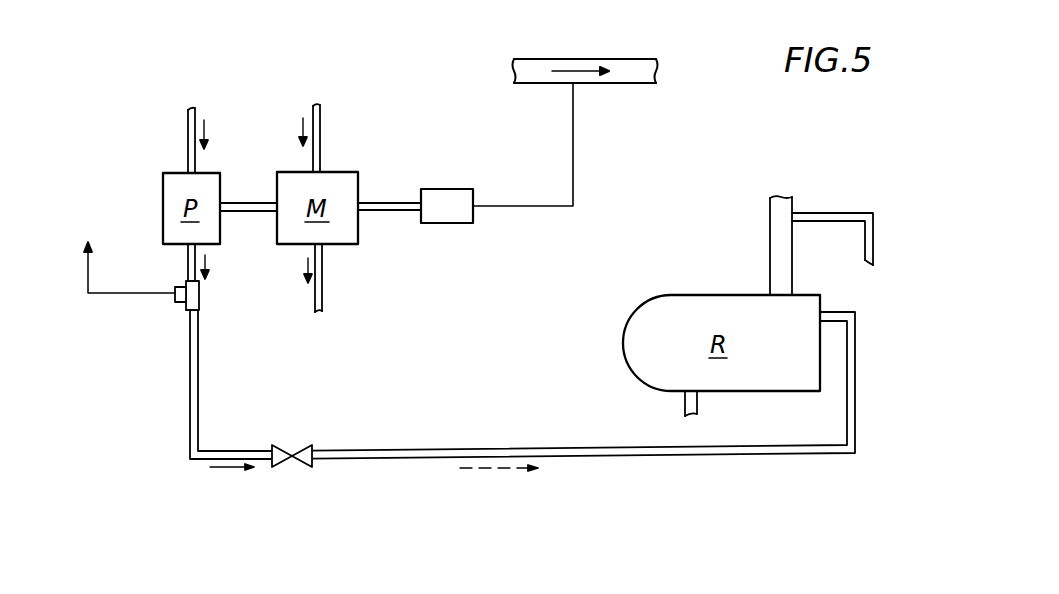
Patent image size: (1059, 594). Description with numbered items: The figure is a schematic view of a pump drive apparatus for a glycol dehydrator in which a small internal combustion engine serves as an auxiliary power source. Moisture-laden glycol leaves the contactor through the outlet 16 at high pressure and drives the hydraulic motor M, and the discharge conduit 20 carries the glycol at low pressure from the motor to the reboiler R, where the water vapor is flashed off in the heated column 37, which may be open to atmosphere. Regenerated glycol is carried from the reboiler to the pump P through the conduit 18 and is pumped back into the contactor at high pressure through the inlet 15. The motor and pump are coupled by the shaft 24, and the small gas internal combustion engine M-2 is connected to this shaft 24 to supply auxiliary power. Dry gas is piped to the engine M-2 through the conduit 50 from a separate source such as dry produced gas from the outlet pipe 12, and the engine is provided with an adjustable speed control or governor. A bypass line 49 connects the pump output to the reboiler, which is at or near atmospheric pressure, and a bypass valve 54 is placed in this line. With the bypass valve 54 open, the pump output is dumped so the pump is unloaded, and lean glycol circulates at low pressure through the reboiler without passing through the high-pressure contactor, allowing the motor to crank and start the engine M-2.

The outlet pipe 12 is at (612, 58).
The inlet 15 is at (88, 272).
The outlet 16 is at (322, 113).
The conduit 18 is at (188, 116).
The discharge conduit 20 is at (323, 277).
The shaft 24 is at (247, 202).
The internal combustion engine M-2 is at (465, 188).
The heated column 37 is at (770, 222).
The bypass line 49 is at (385, 460).
The conduit 50 is at (573, 147).
The bypass valve 54 is at (308, 447).